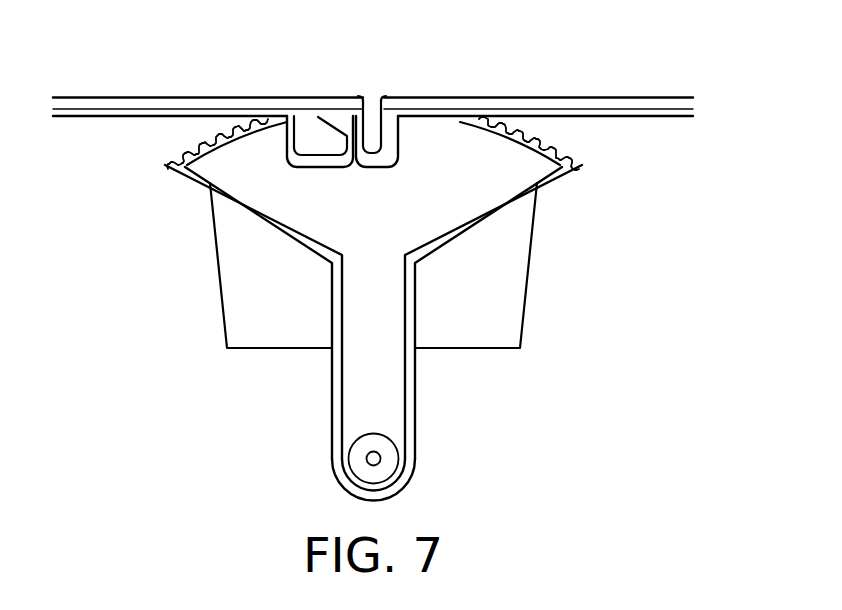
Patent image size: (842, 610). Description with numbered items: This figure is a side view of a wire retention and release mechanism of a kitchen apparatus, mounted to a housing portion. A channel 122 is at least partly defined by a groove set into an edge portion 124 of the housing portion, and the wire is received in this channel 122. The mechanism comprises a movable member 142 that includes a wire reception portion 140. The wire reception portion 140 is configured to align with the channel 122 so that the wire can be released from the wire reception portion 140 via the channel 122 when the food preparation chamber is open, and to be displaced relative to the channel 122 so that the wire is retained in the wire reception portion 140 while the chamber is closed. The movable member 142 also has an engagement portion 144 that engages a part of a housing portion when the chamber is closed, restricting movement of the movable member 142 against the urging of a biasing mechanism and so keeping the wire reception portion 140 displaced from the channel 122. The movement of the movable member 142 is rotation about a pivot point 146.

The channel 122 is at (373, 117).
The edge portion 124 is at (647, 97).
The wire reception portion 140 is at (308, 137).
The movable member 142 is at (228, 165).
The engagement portion 144 is at (522, 133).
The pivot point 146 is at (381, 458).